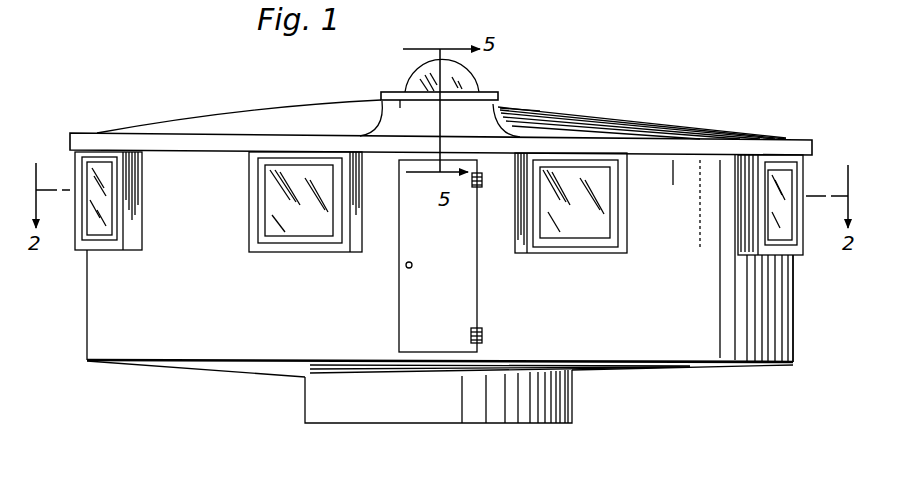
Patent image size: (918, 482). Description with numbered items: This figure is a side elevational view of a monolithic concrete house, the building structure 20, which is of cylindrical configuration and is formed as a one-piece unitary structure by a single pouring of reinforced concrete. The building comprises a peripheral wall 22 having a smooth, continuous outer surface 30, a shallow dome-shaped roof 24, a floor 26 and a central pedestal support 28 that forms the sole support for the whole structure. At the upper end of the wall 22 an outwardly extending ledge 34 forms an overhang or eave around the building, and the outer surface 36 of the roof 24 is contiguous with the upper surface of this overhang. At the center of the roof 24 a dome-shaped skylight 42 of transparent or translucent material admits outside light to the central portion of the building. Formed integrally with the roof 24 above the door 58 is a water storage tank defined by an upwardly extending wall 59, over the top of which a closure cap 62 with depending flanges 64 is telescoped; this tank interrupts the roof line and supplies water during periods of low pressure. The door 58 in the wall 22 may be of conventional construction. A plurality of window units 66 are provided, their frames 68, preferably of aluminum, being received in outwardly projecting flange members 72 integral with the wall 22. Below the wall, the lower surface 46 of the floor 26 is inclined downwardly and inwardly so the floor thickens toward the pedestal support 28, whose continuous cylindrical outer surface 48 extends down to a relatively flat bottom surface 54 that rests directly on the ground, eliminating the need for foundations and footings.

The building structure 20 is at (425, 253).
The peripheral wall 22 is at (407, 259).
The roof 24 is at (441, 107).
The floor 26 is at (138, 366).
The pedestal support 28 is at (407, 409).
The outer surface 30 is at (107, 275).
The ledge 34 is at (742, 147).
The outer surface of roof 36 is at (680, 122).
The dome-shaped skylight 42 is at (456, 88).
The lower surface of floor 46 is at (650, 372).
The cylindrical outer surface 48 is at (343, 406).
The bottom surface 54 is at (440, 422).
The door 58 is at (460, 293).
The upwardly extending wall 59 is at (490, 120).
The closure cap 62 is at (400, 119).
The depending flanges 64 is at (381, 98).
The window units 66 is at (780, 222).
The frames 68 is at (572, 244).
The flange members 72 is at (740, 247).